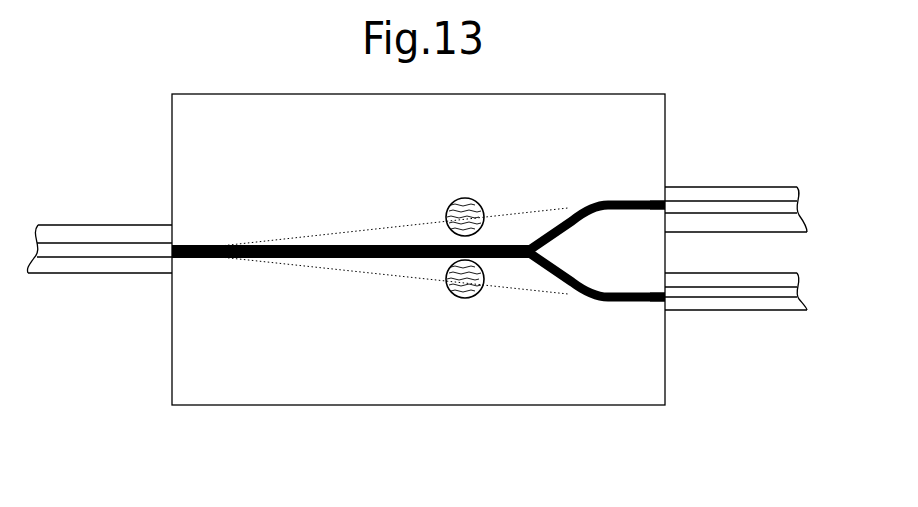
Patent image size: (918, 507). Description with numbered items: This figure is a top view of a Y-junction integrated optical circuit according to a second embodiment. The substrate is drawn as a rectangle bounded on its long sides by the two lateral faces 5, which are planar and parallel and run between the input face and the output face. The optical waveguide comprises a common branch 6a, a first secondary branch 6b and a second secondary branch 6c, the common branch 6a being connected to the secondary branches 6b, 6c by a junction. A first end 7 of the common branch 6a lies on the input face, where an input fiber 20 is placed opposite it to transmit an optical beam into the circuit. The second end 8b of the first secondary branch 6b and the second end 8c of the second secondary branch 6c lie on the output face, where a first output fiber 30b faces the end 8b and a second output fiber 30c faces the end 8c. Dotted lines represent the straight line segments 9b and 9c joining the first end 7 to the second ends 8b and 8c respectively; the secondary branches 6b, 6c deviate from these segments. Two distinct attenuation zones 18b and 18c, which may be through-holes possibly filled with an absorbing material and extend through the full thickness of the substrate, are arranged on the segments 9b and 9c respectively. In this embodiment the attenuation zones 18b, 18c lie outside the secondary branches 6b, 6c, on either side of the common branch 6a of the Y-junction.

The lateral face 5 is at (248, 93).
The input optical fiber 20 is at (113, 225).
The first end 7 is at (176, 247).
The common branch 6a is at (222, 245).
The first secondary branch 6b is at (610, 200).
The second secondary branch 6c is at (612, 302).
The second end of the first secondary branch 8b is at (665, 198).
The second end of the second secondary branch 8c is at (665, 305).
The straight line segment 9b is at (372, 228).
The straight line segment 9c is at (375, 270).
The first attenuation zone 18b is at (465, 198).
The second attenuation zone 18c is at (465, 298).
The first output fiber 30b is at (707, 188).
The second output fiber 30c is at (707, 312).